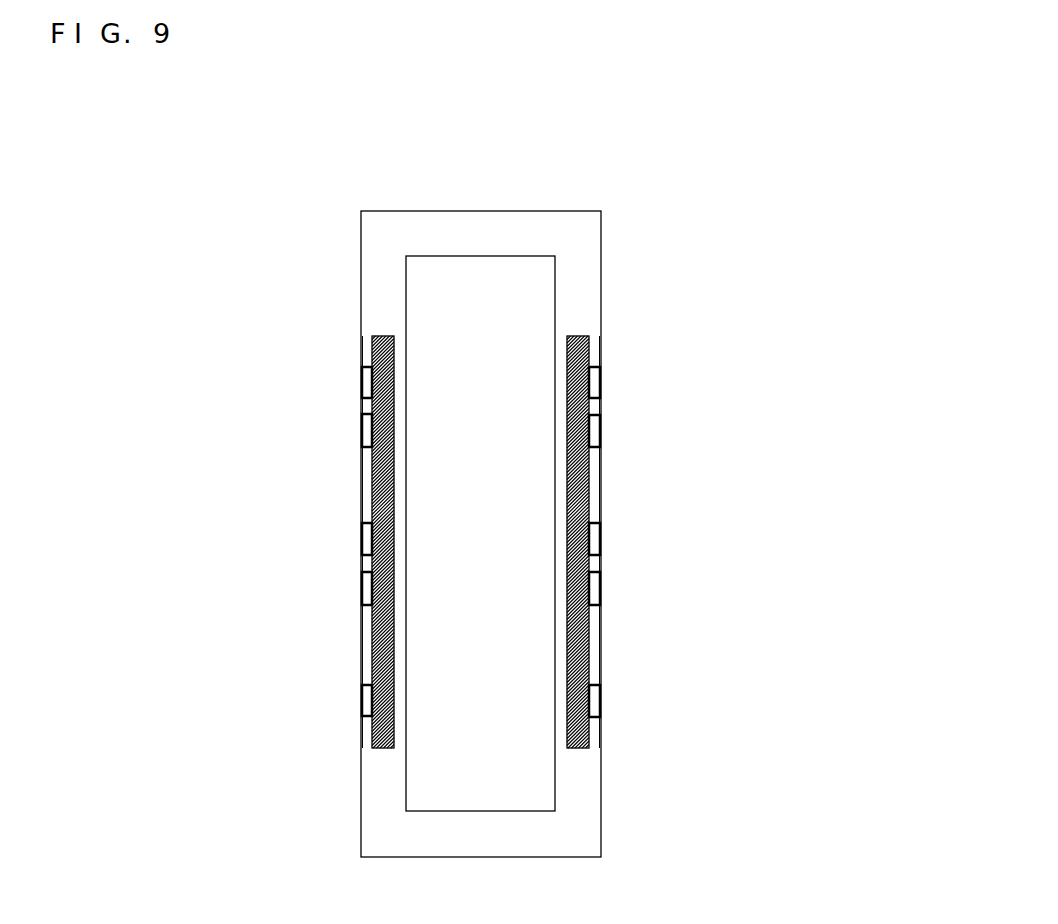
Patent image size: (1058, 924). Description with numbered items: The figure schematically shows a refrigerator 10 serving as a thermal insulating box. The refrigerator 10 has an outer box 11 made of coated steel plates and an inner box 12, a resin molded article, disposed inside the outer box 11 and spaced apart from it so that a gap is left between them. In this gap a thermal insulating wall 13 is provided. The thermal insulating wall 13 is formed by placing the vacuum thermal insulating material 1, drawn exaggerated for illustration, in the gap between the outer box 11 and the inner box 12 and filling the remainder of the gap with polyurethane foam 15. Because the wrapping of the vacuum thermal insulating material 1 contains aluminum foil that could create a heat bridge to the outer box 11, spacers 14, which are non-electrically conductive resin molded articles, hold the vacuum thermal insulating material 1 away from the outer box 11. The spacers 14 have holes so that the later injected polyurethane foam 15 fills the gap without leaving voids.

The refrigerator 10 is at (567, 173).
The outer box 11 is at (601, 263).
The inner box 12 is at (440, 255).
The thermal insulating wall 13 is at (256, 462).
The vacuum thermal insulating material 1 is at (378, 482).
The polyurethane foam 15 is at (364, 512).
The spacers 14 is at (364, 545).